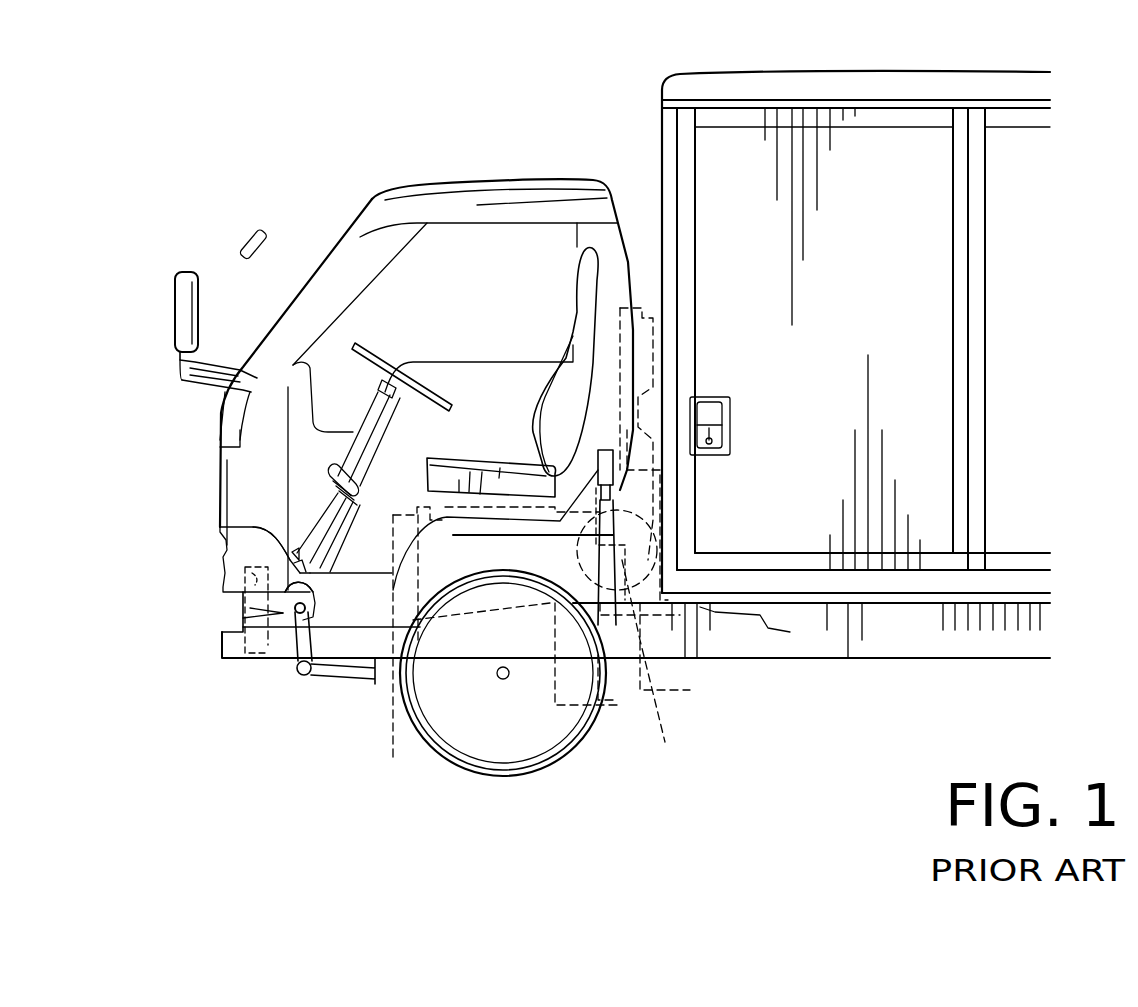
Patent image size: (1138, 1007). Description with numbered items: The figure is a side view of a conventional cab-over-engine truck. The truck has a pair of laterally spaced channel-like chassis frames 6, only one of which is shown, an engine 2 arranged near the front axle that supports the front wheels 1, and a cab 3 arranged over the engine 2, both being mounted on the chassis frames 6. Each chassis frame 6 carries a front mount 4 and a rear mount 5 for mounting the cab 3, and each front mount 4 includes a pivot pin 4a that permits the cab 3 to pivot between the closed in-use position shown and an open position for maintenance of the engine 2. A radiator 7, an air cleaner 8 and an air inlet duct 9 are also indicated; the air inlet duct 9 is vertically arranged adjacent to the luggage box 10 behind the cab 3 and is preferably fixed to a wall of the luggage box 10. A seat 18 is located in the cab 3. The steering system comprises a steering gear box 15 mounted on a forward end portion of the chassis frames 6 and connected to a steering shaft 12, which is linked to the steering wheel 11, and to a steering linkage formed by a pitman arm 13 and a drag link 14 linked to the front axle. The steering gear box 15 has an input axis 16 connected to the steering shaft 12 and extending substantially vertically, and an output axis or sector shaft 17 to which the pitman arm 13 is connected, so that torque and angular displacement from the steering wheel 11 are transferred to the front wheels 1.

The front wheels 1 is at (543, 725).
The engine 2 is at (605, 718).
The cab 3 is at (408, 190).
The front mount 4 is at (250, 608).
The pivot pin 4a is at (252, 580).
The rear mount 5 is at (610, 560).
The chassis frames 6 is at (836, 640).
The radiator 7 is at (392, 715).
The air cleaner 8 is at (649, 671).
The air inlet duct 9 is at (655, 345).
The luggage box 10 is at (882, 145).
The steering wheel 11 is at (392, 348).
The steering shaft 12 is at (357, 420).
The pitman arm 13 is at (295, 625).
The drag link 14 is at (345, 678).
The steering gear box 15 is at (243, 618).
The input axis 16 is at (280, 510).
The sector shaft 17 is at (296, 610).
The seat 18 is at (507, 463).